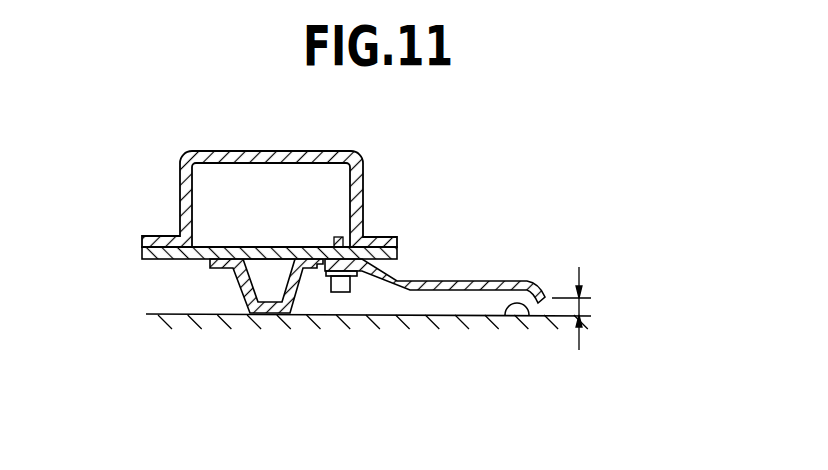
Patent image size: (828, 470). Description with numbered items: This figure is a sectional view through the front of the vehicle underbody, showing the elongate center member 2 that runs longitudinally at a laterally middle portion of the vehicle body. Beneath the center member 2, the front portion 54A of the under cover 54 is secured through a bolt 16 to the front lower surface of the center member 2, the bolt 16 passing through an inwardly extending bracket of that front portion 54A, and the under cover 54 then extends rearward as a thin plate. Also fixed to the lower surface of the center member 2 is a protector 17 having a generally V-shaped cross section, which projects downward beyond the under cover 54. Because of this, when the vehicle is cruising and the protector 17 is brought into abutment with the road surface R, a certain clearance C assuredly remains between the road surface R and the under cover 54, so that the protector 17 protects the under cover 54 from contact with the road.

The center member 2 is at (271, 151).
The under cover 54 is at (435, 246).
The front portion of the under cover 54A is at (467, 281).
The protector 17 is at (236, 280).
The bolt 16 is at (343, 293).
The road surface R is at (505, 318).
The clearance C is at (582, 308).